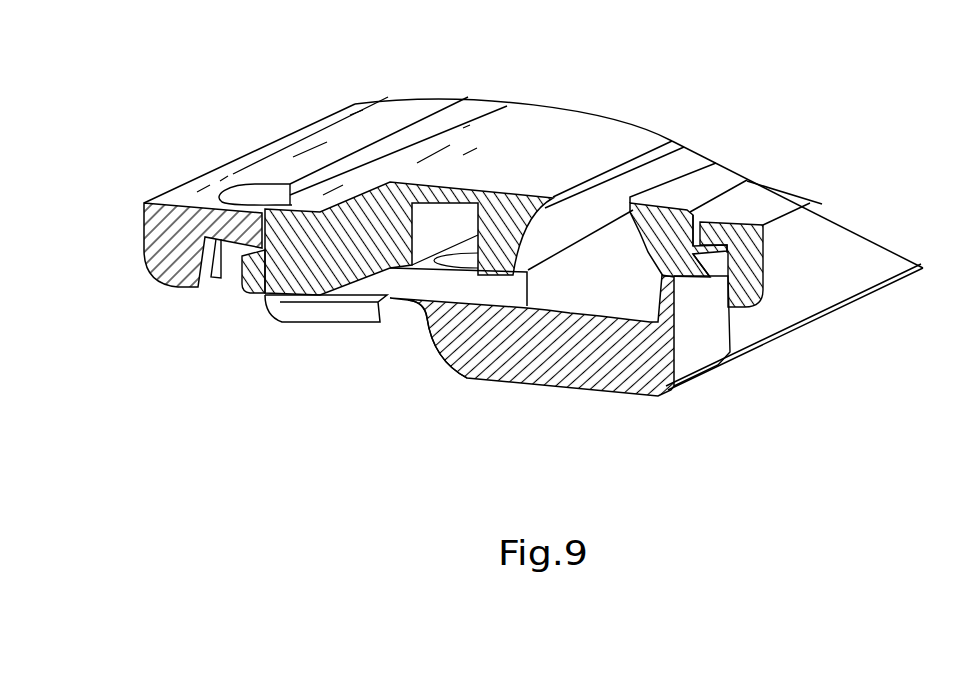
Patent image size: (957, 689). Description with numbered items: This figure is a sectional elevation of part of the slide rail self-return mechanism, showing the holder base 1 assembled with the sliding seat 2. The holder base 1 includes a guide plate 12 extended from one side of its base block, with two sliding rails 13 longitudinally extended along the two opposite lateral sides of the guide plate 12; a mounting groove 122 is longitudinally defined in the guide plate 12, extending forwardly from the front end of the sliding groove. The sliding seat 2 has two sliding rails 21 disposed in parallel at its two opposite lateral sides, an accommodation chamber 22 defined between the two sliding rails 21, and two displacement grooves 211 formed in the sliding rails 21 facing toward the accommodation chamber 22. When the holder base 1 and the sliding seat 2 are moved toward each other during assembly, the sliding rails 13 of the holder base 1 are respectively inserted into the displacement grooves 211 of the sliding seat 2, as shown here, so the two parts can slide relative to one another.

The holder base 1 is at (455, 142).
The guide plate 12 is at (530, 152).
The mounting groove 122 is at (418, 190).
The displacement grooves 211 is at (231, 252).
The sliding rails 13 is at (243, 272).
The sliding seat 2 is at (490, 381).
The sliding rails 21 is at (447, 350).
The accommodation chamber 22 is at (634, 311).